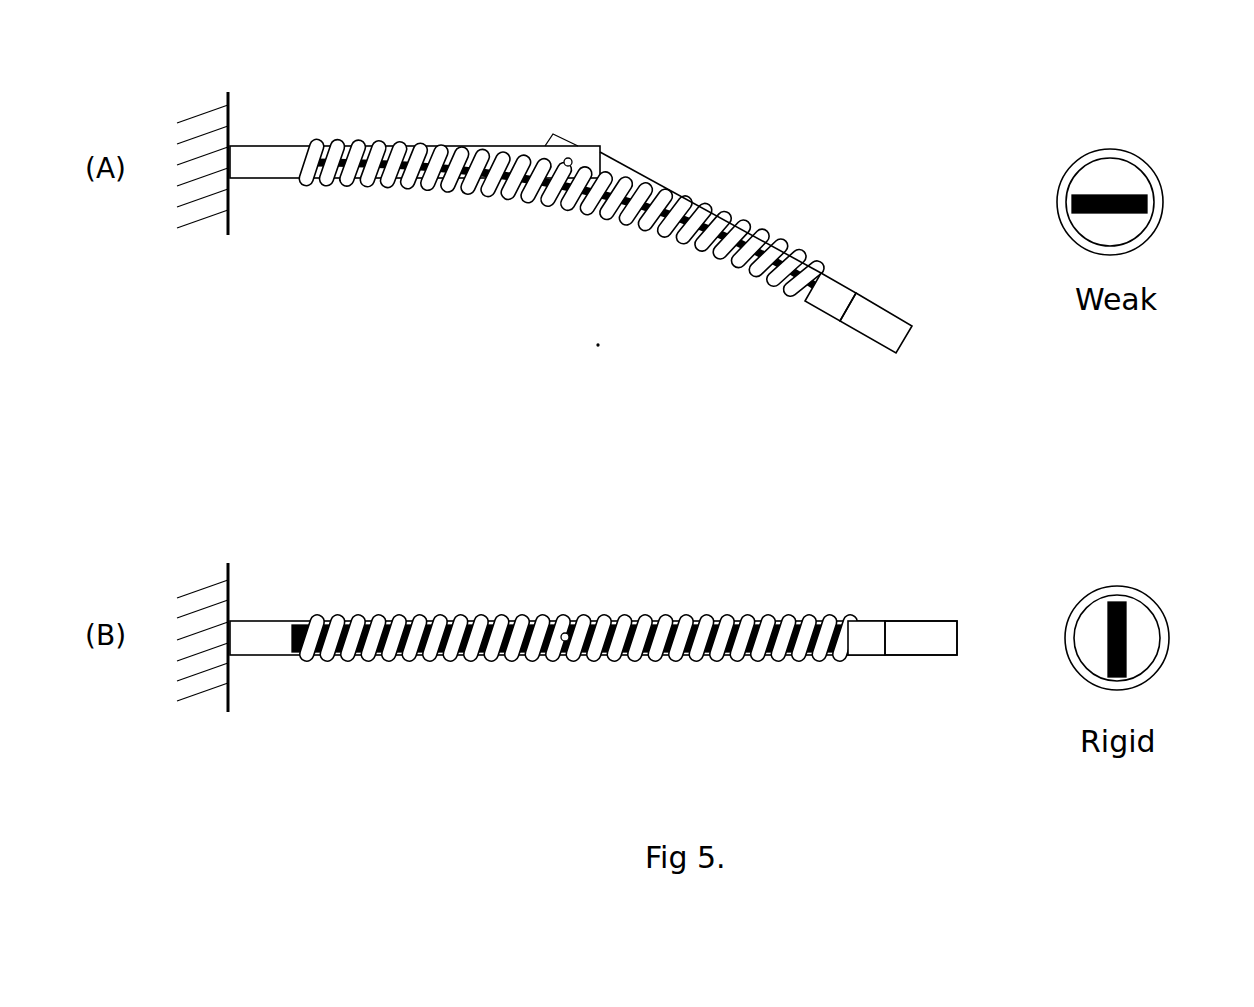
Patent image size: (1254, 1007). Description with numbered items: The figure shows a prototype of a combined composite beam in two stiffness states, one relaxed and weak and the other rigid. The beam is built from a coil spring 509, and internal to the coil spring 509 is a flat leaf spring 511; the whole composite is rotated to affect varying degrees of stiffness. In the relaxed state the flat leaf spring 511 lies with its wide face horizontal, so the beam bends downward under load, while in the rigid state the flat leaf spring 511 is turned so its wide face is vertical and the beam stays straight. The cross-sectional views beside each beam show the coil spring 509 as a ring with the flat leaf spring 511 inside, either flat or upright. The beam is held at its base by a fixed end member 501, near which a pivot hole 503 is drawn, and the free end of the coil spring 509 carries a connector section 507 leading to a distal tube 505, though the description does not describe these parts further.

In FIG. 5A, the proximal fixed tube 501 is at (235, 156).
In FIG. 5B, the proximal fixed tube 501 is at (240, 630).
In FIG. 5A, the pivot hole 503 is at (570, 162).
In FIG. 5B, the pivot hole 503 is at (565, 637).
In FIG. 5A, the distal tube 505 is at (890, 337).
In FIG. 5B, the distal tube 505 is at (907, 628).
In FIG. 5A, the connector section 507 is at (830, 290).
In FIG. 5B, the connector section 507 is at (877, 635).
In FIG. 5A, the coil spring 509 is at (717, 227).
In FIG. 5B, the coil spring 509 is at (705, 623).
In FIG. 5A, the flat leaf spring 511 is at (623, 220).
In FIG. 5B, the flat leaf spring 511 is at (337, 660).